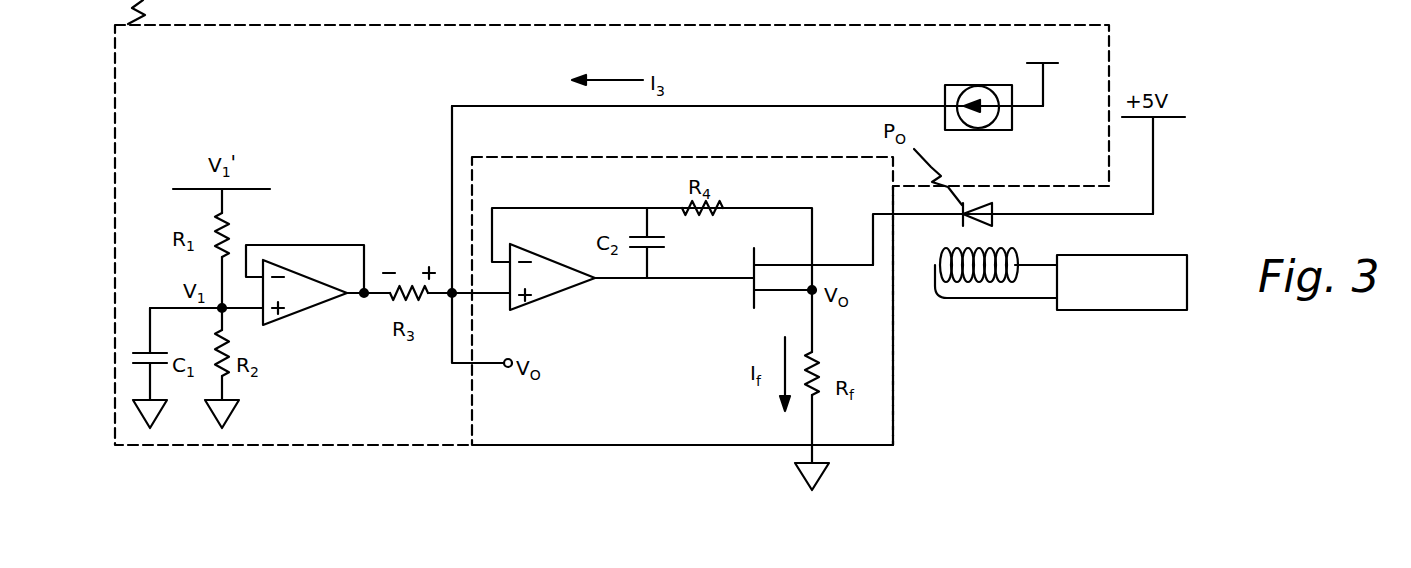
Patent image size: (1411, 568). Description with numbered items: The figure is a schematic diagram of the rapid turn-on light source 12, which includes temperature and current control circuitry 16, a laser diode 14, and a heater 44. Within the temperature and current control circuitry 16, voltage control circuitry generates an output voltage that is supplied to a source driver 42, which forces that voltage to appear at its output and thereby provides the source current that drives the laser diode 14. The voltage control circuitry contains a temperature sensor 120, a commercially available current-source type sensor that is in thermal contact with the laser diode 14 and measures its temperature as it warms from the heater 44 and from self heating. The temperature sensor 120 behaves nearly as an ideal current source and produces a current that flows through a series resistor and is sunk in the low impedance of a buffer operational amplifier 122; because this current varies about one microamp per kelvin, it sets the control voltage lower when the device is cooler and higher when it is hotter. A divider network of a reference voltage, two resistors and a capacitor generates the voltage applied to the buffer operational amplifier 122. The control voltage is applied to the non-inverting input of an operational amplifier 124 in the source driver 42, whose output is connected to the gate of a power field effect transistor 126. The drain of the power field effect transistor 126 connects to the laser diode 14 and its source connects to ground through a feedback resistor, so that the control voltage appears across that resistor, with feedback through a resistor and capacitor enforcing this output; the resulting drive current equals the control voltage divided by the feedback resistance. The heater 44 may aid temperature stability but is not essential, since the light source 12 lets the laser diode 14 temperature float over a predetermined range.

The rapid turn-on light source 12 is at (1102, 428).
The laser diode 14 is at (997, 228).
The temperature and current control circuitry 16 is at (425, 457).
The source driver 42 is at (862, 447).
The heater 44 is at (1098, 312).
The temperature sensor 120 is at (1012, 118).
The buffer operational amplifier 122 is at (305, 270).
The operational amplifier 124 is at (561, 296).
The power field effect transistor 126 is at (780, 292).